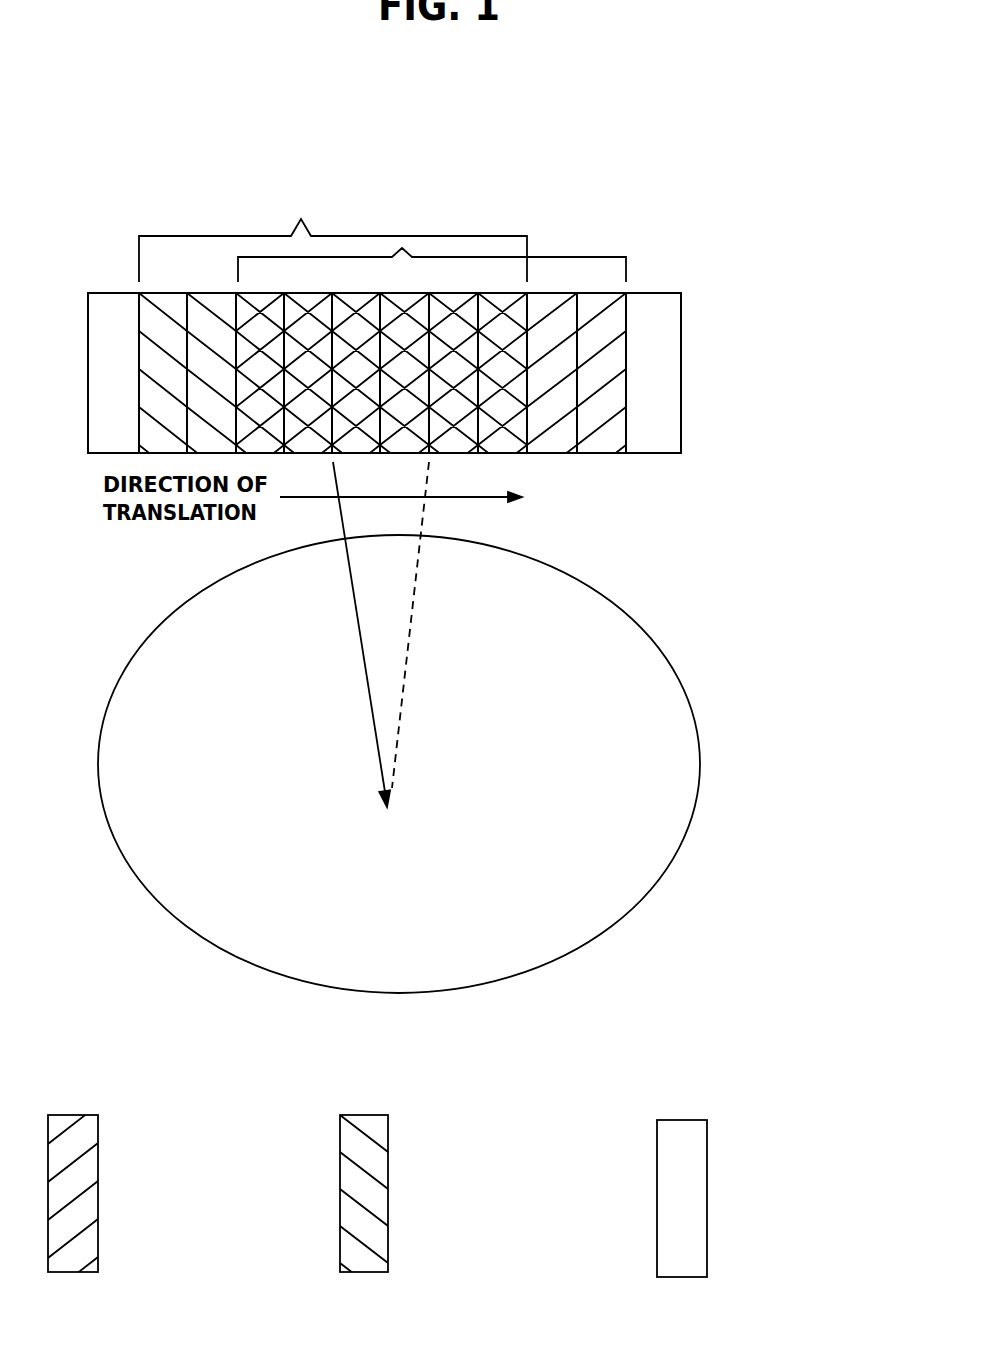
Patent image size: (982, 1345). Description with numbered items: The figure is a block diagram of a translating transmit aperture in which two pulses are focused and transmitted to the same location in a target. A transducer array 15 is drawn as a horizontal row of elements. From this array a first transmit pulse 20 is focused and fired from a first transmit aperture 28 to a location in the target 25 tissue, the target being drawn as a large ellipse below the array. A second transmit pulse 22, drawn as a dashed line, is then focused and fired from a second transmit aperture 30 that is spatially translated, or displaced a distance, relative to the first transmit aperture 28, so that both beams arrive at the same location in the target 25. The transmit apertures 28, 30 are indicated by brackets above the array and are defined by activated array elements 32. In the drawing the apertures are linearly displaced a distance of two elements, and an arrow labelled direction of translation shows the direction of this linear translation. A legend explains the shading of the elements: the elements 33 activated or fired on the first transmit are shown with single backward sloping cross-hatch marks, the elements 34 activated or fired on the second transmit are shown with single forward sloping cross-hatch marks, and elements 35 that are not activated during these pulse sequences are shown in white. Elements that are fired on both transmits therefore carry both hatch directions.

The transducer array 15 is at (471, 331).
The first transmit pulse 20 is at (355, 610).
The second transmit pulse 22 is at (417, 607).
The target 25 is at (635, 902).
The first transmit aperture 28 is at (290, 215).
The second transmit aperture 30 is at (412, 244).
The array elements 32 is at (658, 453).
The elements fired on first transmit 33 is at (388, 1138).
The elements fired on second transmit 34 is at (98, 1132).
The elements not activated 35 is at (707, 1140).